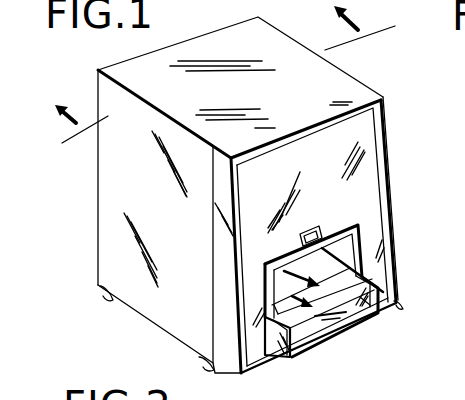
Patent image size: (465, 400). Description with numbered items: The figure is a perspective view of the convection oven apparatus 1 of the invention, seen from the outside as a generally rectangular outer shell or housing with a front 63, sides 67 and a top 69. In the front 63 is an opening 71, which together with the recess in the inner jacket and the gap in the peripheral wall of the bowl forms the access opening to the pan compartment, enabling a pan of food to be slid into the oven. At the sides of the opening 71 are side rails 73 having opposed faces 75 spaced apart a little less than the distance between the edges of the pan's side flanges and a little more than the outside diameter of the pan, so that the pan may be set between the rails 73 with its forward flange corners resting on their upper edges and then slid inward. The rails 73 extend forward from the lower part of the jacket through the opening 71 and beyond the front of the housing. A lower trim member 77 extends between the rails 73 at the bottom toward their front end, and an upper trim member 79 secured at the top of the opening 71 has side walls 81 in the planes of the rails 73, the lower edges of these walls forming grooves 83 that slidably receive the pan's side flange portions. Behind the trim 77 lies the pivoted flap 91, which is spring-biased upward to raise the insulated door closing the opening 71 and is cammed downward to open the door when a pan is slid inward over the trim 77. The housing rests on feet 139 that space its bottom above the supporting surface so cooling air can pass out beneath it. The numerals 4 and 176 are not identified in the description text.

The apparatus 1 is at (103, 51).
The section line indicator 4 is at (234, 92).
The front 63 is at (365, 183).
The sides 67 is at (113, 200).
The top 69 is at (237, 42).
The latch 176 is at (312, 226).
The upper trim member 79 is at (273, 265).
The side walls 81 is at (358, 230).
The grooves 83 is at (388, 287).
The side rails 73 is at (395, 291).
The opposed faces 75 is at (360, 318).
The opening 71 is at (318, 258).
The lower trim member 77 is at (310, 330).
The pivoted flap 91 is at (272, 308).
The feet 139 is at (199, 360).